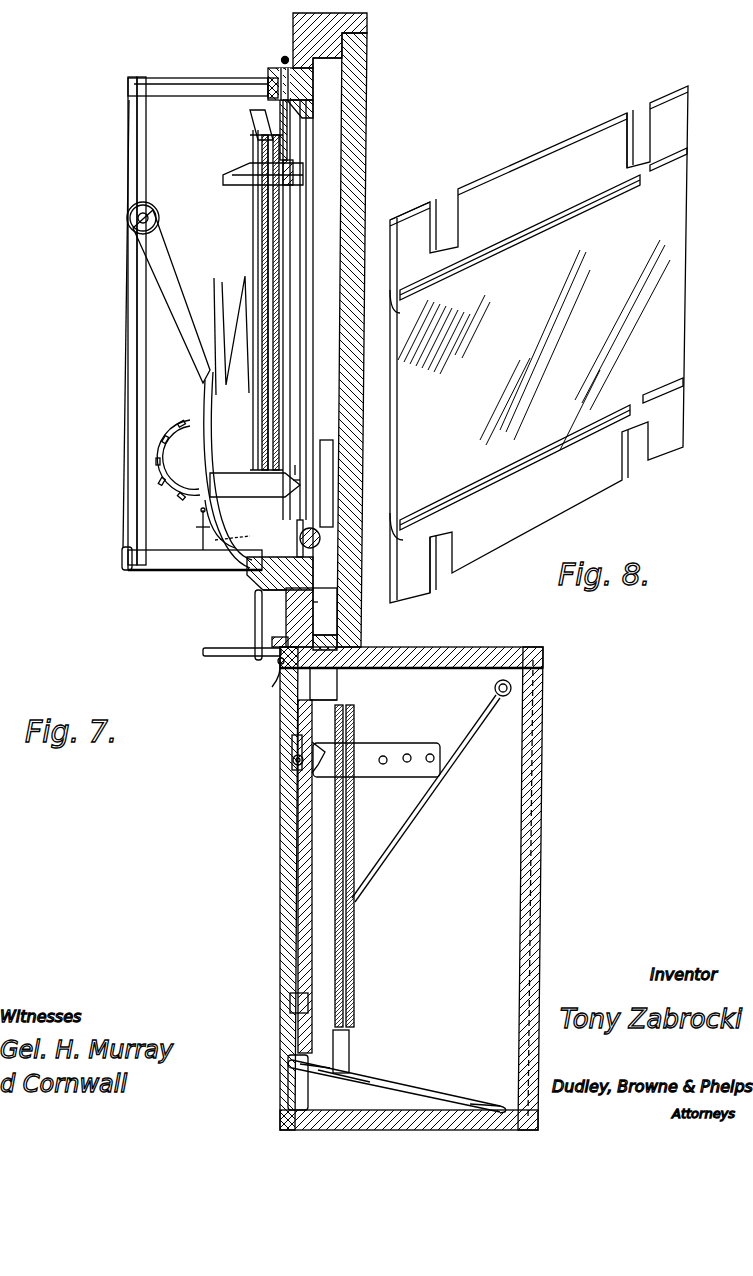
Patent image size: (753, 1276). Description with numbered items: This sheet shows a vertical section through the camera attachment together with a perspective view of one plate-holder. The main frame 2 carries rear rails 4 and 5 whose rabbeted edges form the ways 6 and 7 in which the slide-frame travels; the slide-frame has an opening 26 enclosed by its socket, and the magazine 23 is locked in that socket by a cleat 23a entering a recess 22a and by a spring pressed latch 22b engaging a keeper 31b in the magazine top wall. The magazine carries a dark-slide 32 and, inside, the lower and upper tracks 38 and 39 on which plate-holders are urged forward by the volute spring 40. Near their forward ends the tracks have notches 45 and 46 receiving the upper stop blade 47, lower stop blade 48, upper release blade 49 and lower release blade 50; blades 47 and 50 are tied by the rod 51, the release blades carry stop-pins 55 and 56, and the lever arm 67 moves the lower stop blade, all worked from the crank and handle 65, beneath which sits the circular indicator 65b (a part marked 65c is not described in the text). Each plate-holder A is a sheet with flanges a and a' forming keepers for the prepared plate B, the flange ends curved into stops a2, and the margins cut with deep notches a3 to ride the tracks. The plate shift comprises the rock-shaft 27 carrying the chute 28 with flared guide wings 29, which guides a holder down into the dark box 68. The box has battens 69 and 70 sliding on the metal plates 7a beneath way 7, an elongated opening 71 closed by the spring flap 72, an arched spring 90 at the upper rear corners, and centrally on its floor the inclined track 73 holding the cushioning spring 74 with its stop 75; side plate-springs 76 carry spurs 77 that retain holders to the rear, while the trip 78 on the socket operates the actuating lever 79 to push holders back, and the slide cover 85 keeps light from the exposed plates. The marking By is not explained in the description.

In FIG. 7, the main frame 2 is at (366, 118).
In FIG. 7, the rear rail 4 is at (320, 30).
In FIG. 7, the rear rail 5 is at (296, 612).
In FIG. 7, the way 6 is at (328, 62).
In FIG. 7, the way 7 is at (327, 598).
In FIG. 7, the metal plate 7a is at (403, 617).
In FIG. 7, the recess 22a is at (318, 602).
In FIG. 7, the spring pressed latch 22b is at (284, 56).
In FIG. 7, the magazine 23 is at (150, 350).
In FIG. 7, the cleat 23a is at (255, 600).
In FIG. 7, the opening 26 is at (312, 127).
In FIG. 7, the rock-shaft 27 is at (333, 590).
In FIG. 7, the chute 28 is at (320, 532).
In FIG. 7, the guide wing 29 is at (302, 530).
In FIG. 7, the keeper 31b is at (270, 80).
In FIG. 7, the dark-slide 32 is at (128, 455).
In FIG. 7, the lower track 38 is at (255, 485).
In FIG. 7, the upper track 39 is at (263, 175).
In FIG. 7, the volute spring 40 is at (209, 276).
In FIG. 7, the notch 45 is at (298, 468).
In FIG. 7, the notch 46 is at (277, 173).
In FIG. 7, the upper stop blade 47 is at (273, 137).
In FIG. 7, the lower stop blade 48 is at (298, 482).
In FIG. 7, the upper release blade 49 is at (283, 123).
In FIG. 7, the lower release blade 50 is at (277, 575).
In FIG. 7, the rod 51 is at (281, 263).
In FIG. 7, the stop-pin 55 is at (292, 157).
In FIG. 7, the stop-pin 56 is at (247, 562).
In FIG. 7, the operating crank and handle 65 is at (189, 385).
In FIG. 7, the circular indicator 65b is at (183, 420).
In FIG. 7, the band end 65c is at (194, 524).
In FIG. 7, the lever arm 67 is at (212, 527).
In FIG. 7, the dark box 68 is at (409, 1019).
In FIG. 7, the metal batten 69 is at (266, 681).
In FIG. 7, the metal batten 70 is at (392, 650).
In FIG. 7, the elongated opening 71 is at (330, 675).
In FIG. 7, the spring flap 72 is at (313, 668).
In FIG. 7, the inclined track 73 is at (447, 1092).
In FIG. 7, the spring 74 is at (403, 1085).
In FIG. 7, the stop 75 is at (338, 1060).
In FIG. 7, the plate-spring 76 is at (322, 638).
In FIG. 7, the spur 77 is at (318, 758).
In FIG. 7, the spring actuated trip 78 is at (257, 632).
In FIG. 7, the actuating lever 79 is at (230, 656).
In FIG. 7, the slide cover 85 is at (542, 885).
In FIG. 7, the arched spring 90 is at (447, 752).
In FIG. 7, the plate-holder A is at (252, 437).
In FIG. 8, the plate-holder A is at (539, 344).
In FIG. 7, the prepared plate B is at (260, 227).
In FIG. 8, the prepared plate B is at (534, 345).
In FIG. 7, the lever part By is at (356, 1075).
In FIG. 8, the flange a is at (404, 415).
In FIG. 8, the flange a' is at (520, 352).
In FIG. 7, the stop a2 is at (370, 800).
In FIG. 8, the stop a2 is at (690, 163).
In FIG. 7, the notch a3 is at (262, 152).
In FIG. 8, the notch a3 is at (634, 112).